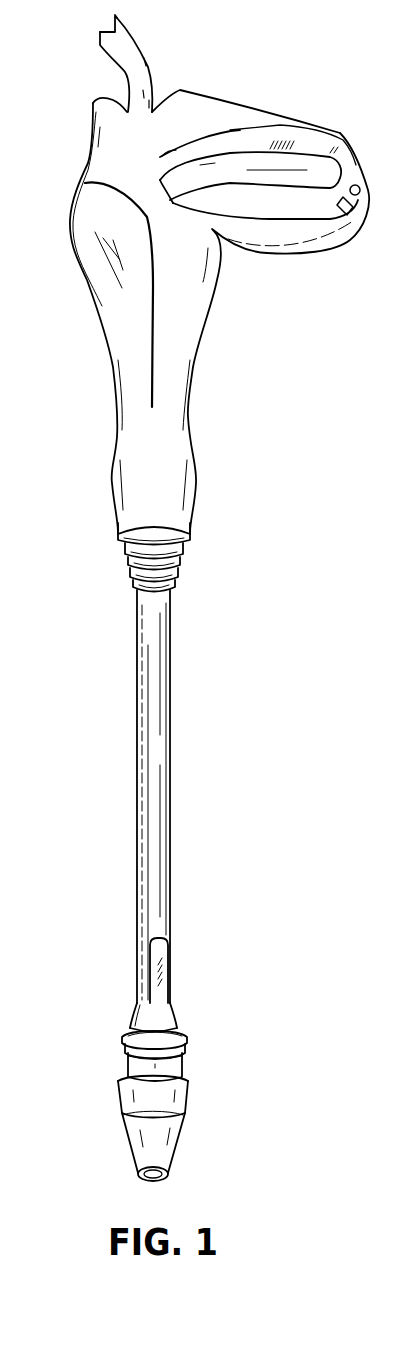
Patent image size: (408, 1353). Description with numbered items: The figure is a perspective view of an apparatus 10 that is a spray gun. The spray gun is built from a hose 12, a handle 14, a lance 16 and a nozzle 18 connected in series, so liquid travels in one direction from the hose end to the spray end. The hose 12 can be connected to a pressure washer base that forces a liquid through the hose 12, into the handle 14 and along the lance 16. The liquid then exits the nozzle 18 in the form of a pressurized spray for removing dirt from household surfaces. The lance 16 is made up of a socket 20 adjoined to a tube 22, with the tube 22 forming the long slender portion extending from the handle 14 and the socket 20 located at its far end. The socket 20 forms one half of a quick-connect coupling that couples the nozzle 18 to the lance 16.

The apparatus 10 is at (198, 61).
The hose 12 is at (122, 72).
The handle 14 is at (95, 292).
The lance 16 is at (137, 820).
The nozzle 18 is at (132, 1108).
The socket 20 is at (112, 1041).
The tube 22 is at (139, 1003).